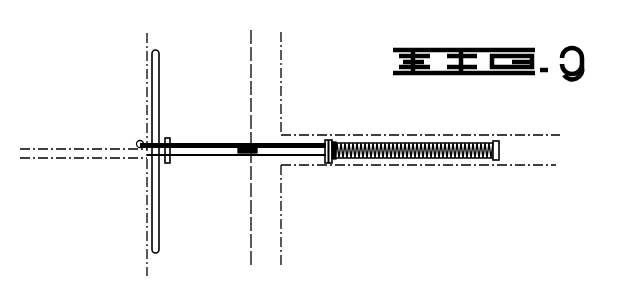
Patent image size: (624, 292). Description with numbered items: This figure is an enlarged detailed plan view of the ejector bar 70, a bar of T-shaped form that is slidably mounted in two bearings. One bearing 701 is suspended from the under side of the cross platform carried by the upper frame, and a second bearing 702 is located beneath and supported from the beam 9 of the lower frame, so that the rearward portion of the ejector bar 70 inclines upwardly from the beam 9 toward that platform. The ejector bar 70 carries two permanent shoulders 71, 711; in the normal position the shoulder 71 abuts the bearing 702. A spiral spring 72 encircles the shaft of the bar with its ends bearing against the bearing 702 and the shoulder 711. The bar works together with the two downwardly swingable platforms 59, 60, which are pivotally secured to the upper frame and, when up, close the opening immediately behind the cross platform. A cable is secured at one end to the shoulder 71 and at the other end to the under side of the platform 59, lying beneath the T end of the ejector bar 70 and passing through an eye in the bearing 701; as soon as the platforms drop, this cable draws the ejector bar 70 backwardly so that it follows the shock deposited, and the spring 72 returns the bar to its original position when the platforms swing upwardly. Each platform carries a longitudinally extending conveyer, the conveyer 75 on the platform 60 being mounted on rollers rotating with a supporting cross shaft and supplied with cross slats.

The beam 9 is at (553, 136).
The downwardly swingable platform 59 is at (83, 125).
The downwardly swingable platform 60 is at (83, 182).
The ejector bar 70 is at (225, 127).
The bearing 701 is at (170, 140).
The second bearing 702 is at (336, 140).
The shoulder 71 is at (323, 141).
The shoulder 711 is at (497, 141).
The spiral spring 72 is at (440, 113).
The conveyer 75 is at (240, 146).